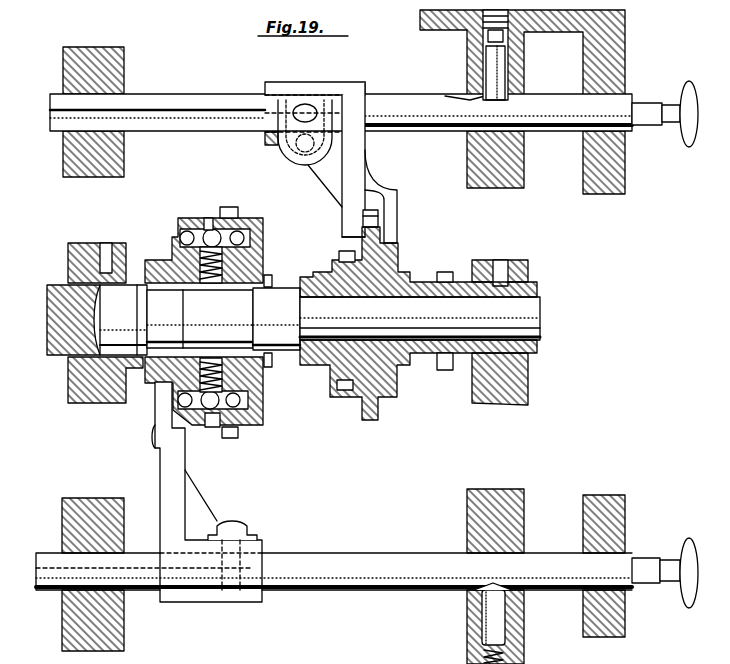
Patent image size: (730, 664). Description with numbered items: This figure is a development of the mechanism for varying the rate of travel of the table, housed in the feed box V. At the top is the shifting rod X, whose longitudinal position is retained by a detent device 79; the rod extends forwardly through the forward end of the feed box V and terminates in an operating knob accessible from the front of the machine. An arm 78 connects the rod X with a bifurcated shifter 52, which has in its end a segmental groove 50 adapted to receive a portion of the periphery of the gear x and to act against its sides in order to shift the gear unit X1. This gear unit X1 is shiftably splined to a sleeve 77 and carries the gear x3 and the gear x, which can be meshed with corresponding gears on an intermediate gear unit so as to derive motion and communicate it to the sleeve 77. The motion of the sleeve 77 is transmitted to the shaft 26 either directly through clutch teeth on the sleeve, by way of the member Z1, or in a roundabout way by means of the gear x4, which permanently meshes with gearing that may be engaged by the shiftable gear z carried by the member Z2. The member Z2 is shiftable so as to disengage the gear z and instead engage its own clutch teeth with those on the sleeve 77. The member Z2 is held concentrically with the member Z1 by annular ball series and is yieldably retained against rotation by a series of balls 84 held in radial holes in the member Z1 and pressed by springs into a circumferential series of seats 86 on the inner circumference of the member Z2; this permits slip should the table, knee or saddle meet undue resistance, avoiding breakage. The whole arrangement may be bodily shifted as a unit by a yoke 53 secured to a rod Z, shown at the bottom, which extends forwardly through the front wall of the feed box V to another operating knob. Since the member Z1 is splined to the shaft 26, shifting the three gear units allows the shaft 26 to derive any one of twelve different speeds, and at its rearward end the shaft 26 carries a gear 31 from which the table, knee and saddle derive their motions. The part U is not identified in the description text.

The shifting rod X is at (169, 98).
The detent device 79 is at (508, 72).
The feed box V is at (622, 165).
The arm 78 is at (377, 190).
The bifurcated shifter 52 is at (342, 213).
The segmental groove 50 is at (370, 226).
The gear x is at (375, 226).
The gear 31 is at (50, 352).
The shaft 26 is at (534, 312).
The member Z' Z1 is at (172, 250).
The member Z² Z2 is at (263, 250).
The balls 84 is at (208, 228).
The seats 86 is at (211, 428).
The shiftable gear z is at (238, 433).
The gear unit X' X1 is at (392, 258).
The sleeve 77 is at (413, 276).
The gear x³ x3 is at (340, 256).
The gear x⁴ x4 is at (445, 370).
The yoke 53 is at (158, 426).
The rod Z is at (338, 560).
The detent U is at (373, 660).